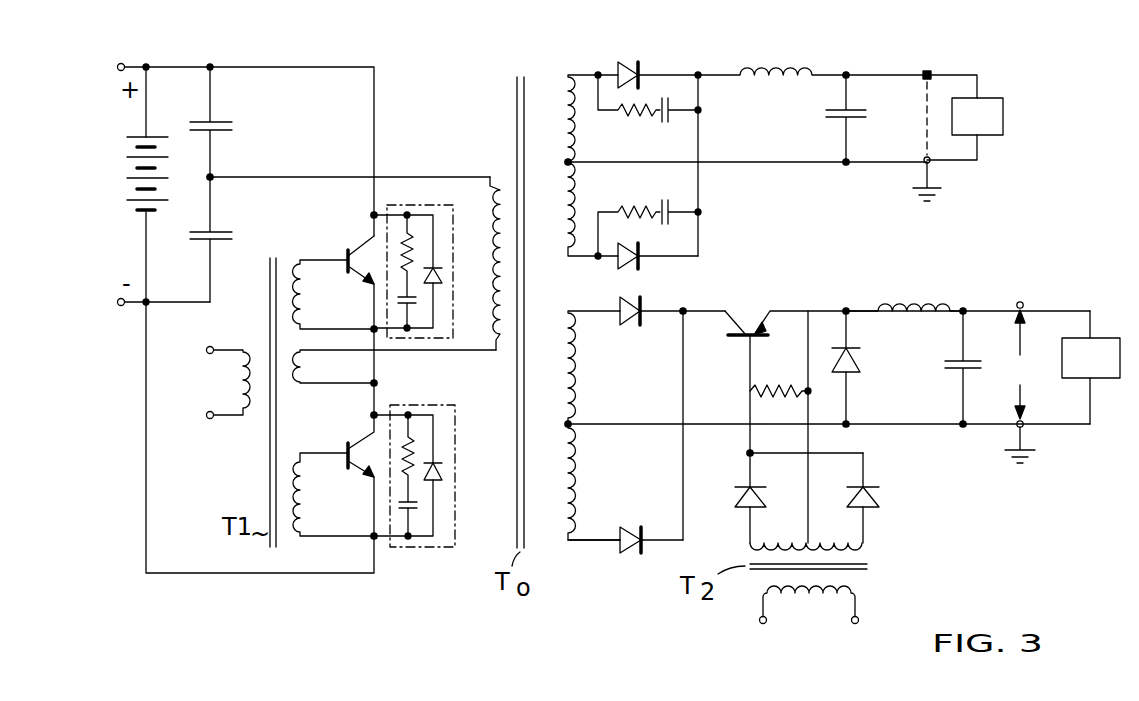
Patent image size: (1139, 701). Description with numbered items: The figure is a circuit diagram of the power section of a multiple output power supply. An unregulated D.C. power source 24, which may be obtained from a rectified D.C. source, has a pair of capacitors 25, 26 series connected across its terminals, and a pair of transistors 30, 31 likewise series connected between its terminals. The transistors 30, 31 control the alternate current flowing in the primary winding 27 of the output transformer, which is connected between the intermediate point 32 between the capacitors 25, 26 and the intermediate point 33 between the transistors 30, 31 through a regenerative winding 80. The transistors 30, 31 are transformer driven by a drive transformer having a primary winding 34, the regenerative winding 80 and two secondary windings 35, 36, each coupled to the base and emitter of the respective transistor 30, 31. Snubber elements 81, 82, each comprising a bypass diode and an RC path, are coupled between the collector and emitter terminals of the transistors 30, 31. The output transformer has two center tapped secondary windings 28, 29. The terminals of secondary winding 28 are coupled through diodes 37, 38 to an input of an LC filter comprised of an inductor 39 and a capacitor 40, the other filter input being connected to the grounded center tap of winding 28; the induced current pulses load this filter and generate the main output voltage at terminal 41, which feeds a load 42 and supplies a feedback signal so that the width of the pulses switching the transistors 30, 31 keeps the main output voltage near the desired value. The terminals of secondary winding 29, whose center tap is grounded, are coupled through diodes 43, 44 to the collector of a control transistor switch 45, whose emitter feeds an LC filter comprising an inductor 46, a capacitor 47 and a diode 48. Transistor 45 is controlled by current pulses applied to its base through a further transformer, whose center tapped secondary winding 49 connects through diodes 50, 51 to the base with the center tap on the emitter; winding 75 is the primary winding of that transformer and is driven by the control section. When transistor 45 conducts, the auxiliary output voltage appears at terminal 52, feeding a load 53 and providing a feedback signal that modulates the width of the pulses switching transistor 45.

The unregulated D.C. power source 24 is at (140, 214).
The capacitor 25 is at (222, 132).
The capacitor 26 is at (222, 240).
The primary winding 27 is at (495, 178).
The secondary winding 28 is at (580, 148).
The secondary winding 29 is at (580, 394).
The transistor 30 is at (345, 257).
The transistor 31 is at (346, 450).
The intermediate point 32 is at (214, 174).
The intermediate point 33 is at (378, 386).
The primary winding 34 is at (238, 385).
The secondary winding 35 is at (333, 294).
The secondary winding 36 is at (333, 494).
The diode 37 is at (640, 72).
The diode 38 is at (645, 262).
The inductor 39 is at (765, 80).
The capacitor 40 is at (834, 122).
The terminal 41 is at (911, 118).
The load 42 is at (1004, 116).
The diode 43 is at (630, 326).
The diode 44 is at (637, 525).
The control transistor switch 45 is at (740, 340).
The inductor 46 is at (906, 318).
The capacitor 47 is at (958, 372).
The diode 48 is at (852, 372).
The secondary winding 49 is at (866, 548).
The diode 50 is at (745, 508).
The diode 51 is at (878, 496).
The terminal 52 is at (1032, 290).
The load 53 is at (1108, 336).
The winding 75 is at (792, 598).
The regenerative winding 80 is at (308, 372).
The snubber element 81 is at (444, 270).
The snubber element 82 is at (447, 465).